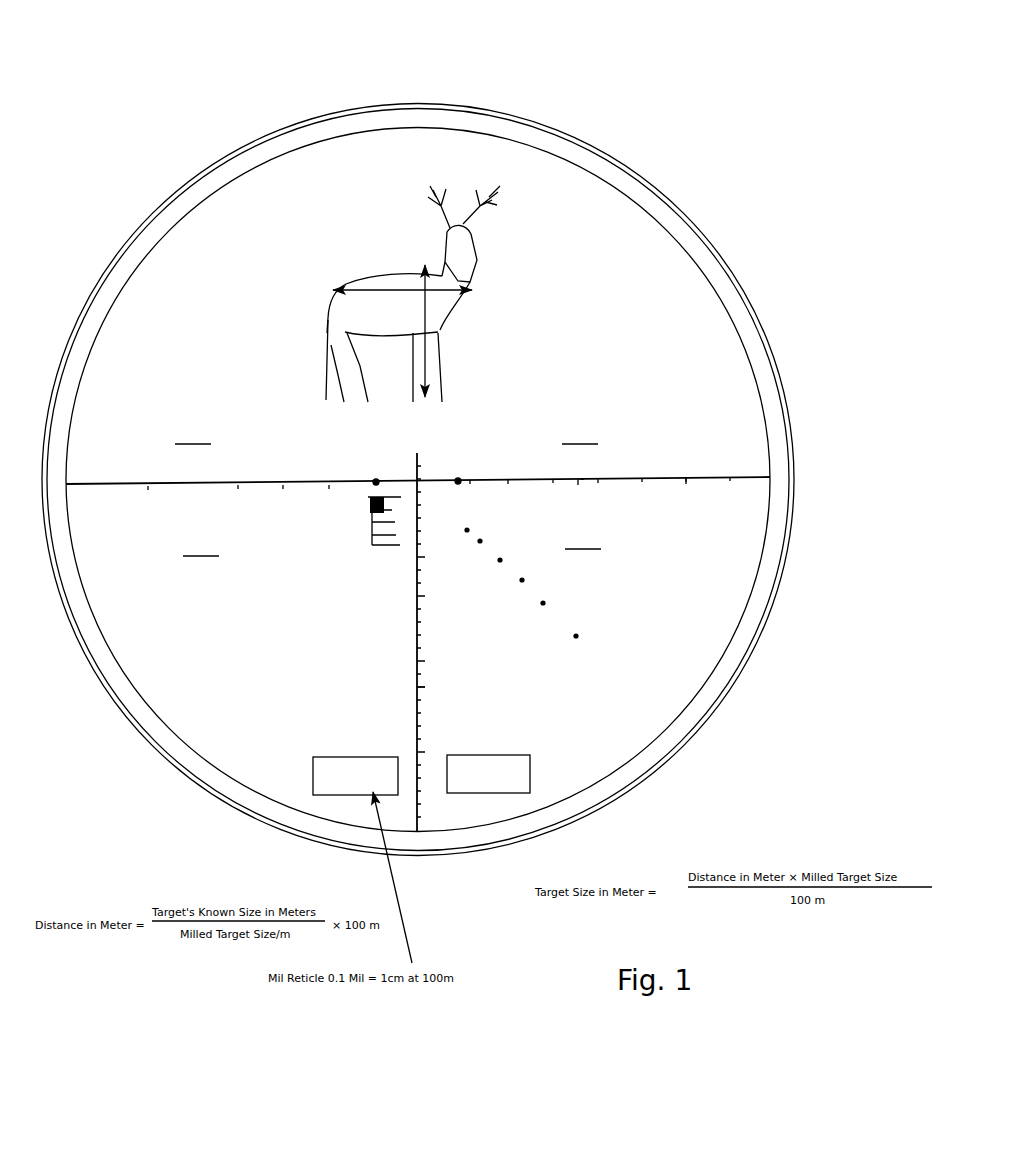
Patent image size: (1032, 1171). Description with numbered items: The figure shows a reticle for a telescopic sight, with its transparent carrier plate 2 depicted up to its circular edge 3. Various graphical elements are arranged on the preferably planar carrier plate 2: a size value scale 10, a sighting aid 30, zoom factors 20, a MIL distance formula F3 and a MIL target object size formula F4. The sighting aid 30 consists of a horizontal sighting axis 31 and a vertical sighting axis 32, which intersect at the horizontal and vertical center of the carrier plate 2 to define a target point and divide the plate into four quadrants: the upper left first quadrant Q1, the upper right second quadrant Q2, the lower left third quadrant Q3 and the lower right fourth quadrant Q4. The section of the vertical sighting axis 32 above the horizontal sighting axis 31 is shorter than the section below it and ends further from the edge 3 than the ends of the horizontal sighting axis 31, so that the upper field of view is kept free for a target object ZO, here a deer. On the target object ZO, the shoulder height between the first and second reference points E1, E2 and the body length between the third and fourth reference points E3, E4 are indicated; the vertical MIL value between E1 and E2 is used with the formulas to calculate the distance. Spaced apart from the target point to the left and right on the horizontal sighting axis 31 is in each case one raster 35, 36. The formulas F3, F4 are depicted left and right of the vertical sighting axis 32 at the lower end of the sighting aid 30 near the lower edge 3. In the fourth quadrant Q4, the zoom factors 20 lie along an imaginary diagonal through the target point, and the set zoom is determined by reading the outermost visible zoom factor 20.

The transparent carrier plate 2 is at (610, 238).
The edge 3 is at (693, 212).
The size value scale 10 is at (370, 538).
The zoom factors 20 is at (583, 640).
The sighting aid 30 is at (580, 483).
The horizontal sighting axis 31 is at (688, 480).
The vertical sighting axis 32 is at (425, 685).
The raster 35 is at (458, 480).
The raster 36 is at (375, 481).
The first reference point E1 is at (425, 265).
The second reference point E2 is at (422, 394).
The third reference point E3 is at (333, 290).
The fourth reference point E4 is at (470, 290).
The target object ZO is at (453, 212).
The MIL distance formula F3 is at (300, 797).
The MIL target object size formula F4 is at (498, 800).
The first quadrant Q1 is at (193, 432).
The second quadrant Q2 is at (580, 432).
The third quadrant Q3 is at (201, 544).
The fourth quadrant Q4 is at (583, 537).